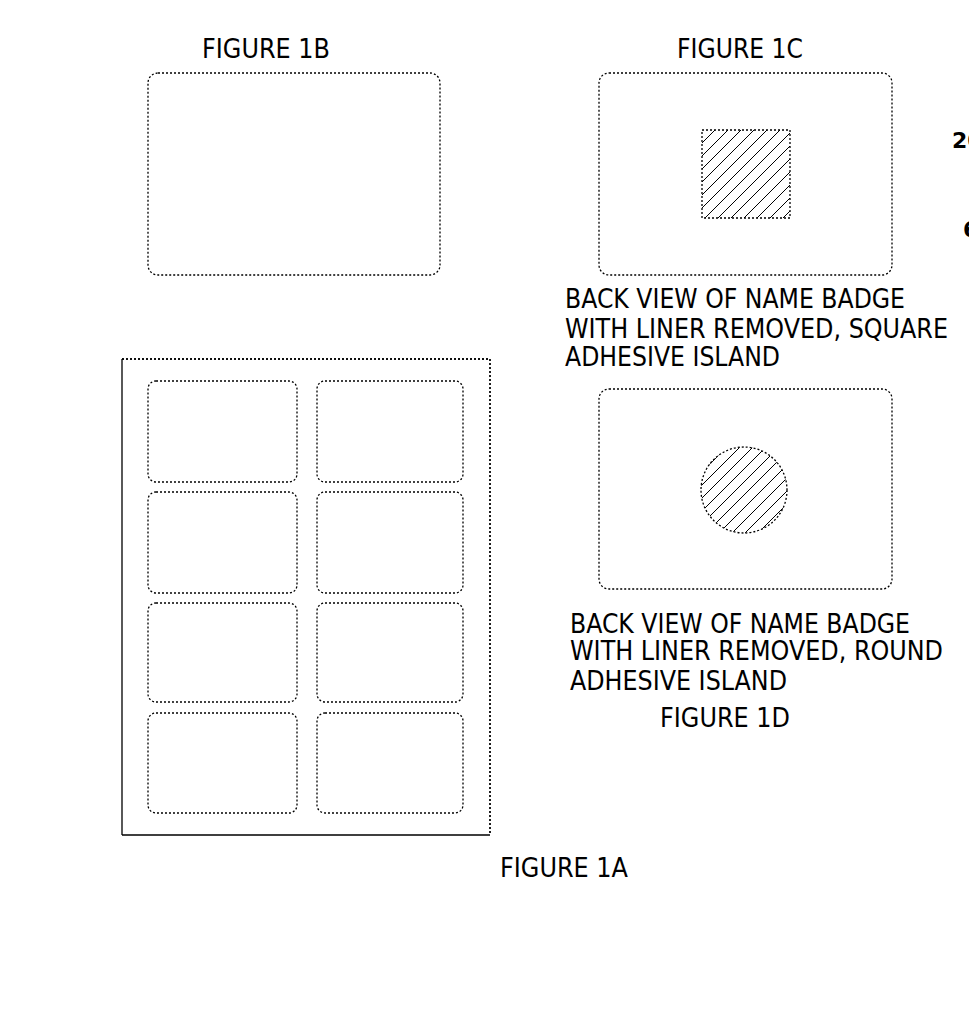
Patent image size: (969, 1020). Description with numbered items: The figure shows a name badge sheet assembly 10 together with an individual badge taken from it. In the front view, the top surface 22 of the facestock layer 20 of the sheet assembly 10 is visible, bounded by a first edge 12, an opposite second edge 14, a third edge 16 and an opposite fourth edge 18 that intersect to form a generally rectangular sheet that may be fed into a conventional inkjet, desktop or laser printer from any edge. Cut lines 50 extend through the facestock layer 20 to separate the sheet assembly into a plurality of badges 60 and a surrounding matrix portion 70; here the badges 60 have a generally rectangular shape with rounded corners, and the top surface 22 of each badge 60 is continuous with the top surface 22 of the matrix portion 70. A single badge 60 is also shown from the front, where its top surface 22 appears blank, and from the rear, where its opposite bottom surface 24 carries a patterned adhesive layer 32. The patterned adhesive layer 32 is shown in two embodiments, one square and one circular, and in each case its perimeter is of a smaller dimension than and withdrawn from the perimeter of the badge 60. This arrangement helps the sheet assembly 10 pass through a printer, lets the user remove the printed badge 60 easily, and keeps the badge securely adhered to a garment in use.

In FIG. 1A, the badge sheet assembly 10 is at (89, 360).
In FIG. 1A, the first edge 12 is at (268, 358).
In FIG. 1A, the second edge 14 is at (280, 835).
In FIG. 1A, the third edge 16 is at (123, 708).
In FIG. 1A, the fourth edge 18 is at (485, 522).
In FIG. 1A, the facestock layer 20 is at (121, 438).
In FIG. 1B, the top surface 22 is at (390, 93).
In FIG. 1A, the top surface 22 is at (403, 373).
In FIG. 1C, the bottom surface 24 is at (850, 87).
In FIG. 1D, the bottom surface 24 is at (853, 448).
In FIG. 1C, the patterned adhesive layer 32 is at (732, 170).
In FIG. 1D, the patterned adhesive layer 32 is at (738, 480).
In FIG. 1A, the cut line 50 is at (150, 575).
In FIG. 1B, the badge 60 is at (169, 129).
In FIG. 1C, the badge 60 is at (608, 143).
In FIG. 1D, the badge 60 is at (638, 441).
In FIG. 1A, the badge 60 is at (214, 540).
In FIG. 1A, the matrix portion 70 is at (135, 640).